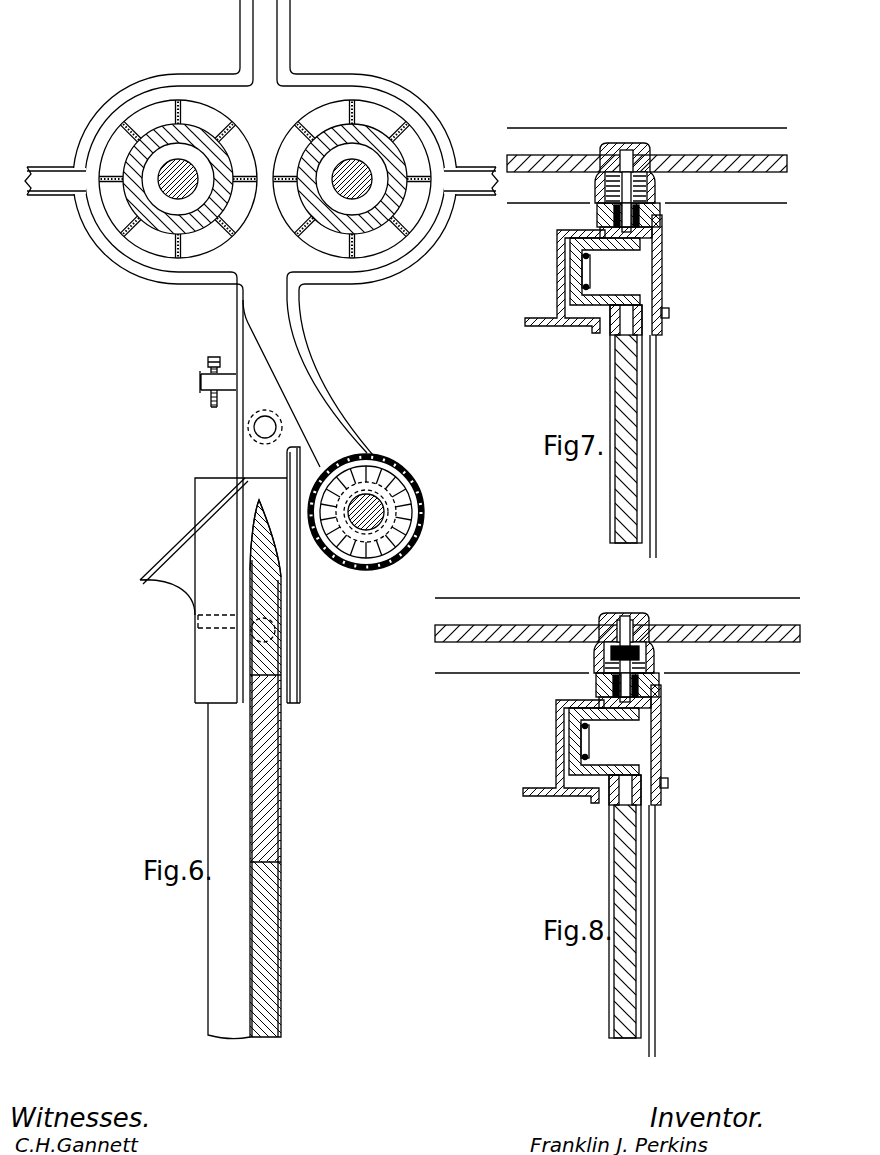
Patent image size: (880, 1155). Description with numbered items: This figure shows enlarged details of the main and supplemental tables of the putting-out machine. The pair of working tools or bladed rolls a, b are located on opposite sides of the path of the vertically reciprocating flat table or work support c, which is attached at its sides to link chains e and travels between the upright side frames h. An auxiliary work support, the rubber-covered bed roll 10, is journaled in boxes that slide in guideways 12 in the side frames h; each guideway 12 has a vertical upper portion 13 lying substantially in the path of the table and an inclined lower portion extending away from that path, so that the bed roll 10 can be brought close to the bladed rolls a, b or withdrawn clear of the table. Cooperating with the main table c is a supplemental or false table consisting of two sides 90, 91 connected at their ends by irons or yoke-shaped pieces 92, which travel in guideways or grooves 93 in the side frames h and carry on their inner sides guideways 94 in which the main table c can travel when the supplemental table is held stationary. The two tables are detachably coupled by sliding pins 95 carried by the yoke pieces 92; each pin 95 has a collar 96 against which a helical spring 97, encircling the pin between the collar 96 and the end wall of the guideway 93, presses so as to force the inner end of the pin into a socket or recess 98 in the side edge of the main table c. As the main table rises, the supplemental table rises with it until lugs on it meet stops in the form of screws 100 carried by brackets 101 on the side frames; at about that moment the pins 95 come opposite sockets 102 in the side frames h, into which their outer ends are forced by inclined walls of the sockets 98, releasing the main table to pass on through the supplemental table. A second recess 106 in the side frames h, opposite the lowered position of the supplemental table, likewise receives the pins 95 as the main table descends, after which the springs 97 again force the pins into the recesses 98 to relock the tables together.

In FIG. 6, the bladed roll a is at (355, 252).
In FIG. 6, the bladed roll b is at (130, 228).
In FIG. 6, the table c is at (268, 767).
In FIG. 7, the table c is at (620, 387).
In FIG. 8, the table c is at (609, 906).
In FIG. 7, the link chain e is at (590, 272).
In FIG. 8, the link chain e is at (596, 742).
In FIG. 7, the upright side frame h is at (718, 163).
In FIG. 8, the upright side frame h is at (617, 635).
In FIG. 6, the bed roll 10 is at (410, 490).
In FIG. 6, the guideway 12 is at (343, 402).
In FIG. 6, the vertical upper portion 13 is at (238, 305).
In FIG. 6, the side 90 is at (180, 545).
In FIG. 6, the side 91 is at (300, 598).
In FIG. 7, the side 91 is at (656, 390).
In FIG. 8, the side 91 is at (671, 931).
In FIG. 6, the yoke-shaped piece 92 is at (243, 480).
In FIG. 7, the yoke-shaped piece 92 is at (560, 264).
In FIG. 8, the yoke-shaped piece 92 is at (614, 745).
In FIG. 6, the guideway 93 is at (237, 456).
In FIG. 7, the guideway 93 is at (655, 160).
In FIG. 8, the guideway 93 is at (645, 636).
In FIG. 6, the guideway 94 is at (258, 504).
In FIG. 7, the guideway 94 is at (655, 215).
In FIG. 8, the guideway 94 is at (651, 690).
In FIG. 7, the sliding pin 95 is at (612, 216).
In FIG. 8, the sliding pin 95 is at (599, 648).
In FIG. 7, the collar 96 is at (647, 198).
In FIG. 8, the collar 96 is at (596, 682).
In FIG. 8, the helical spring 97 is at (593, 652).
In FIG. 7, the socket 98 is at (650, 232).
In FIG. 6, the screw 100 is at (210, 358).
In FIG. 6, the bracket 101 is at (200, 385).
In FIG. 6, the socket 102 is at (254, 430).
In FIG. 7, the socket 102 is at (620, 150).
In FIG. 8, the second recess 106 is at (647, 634).